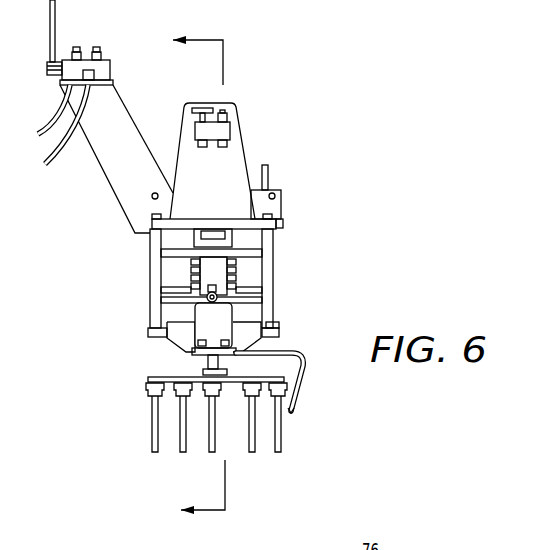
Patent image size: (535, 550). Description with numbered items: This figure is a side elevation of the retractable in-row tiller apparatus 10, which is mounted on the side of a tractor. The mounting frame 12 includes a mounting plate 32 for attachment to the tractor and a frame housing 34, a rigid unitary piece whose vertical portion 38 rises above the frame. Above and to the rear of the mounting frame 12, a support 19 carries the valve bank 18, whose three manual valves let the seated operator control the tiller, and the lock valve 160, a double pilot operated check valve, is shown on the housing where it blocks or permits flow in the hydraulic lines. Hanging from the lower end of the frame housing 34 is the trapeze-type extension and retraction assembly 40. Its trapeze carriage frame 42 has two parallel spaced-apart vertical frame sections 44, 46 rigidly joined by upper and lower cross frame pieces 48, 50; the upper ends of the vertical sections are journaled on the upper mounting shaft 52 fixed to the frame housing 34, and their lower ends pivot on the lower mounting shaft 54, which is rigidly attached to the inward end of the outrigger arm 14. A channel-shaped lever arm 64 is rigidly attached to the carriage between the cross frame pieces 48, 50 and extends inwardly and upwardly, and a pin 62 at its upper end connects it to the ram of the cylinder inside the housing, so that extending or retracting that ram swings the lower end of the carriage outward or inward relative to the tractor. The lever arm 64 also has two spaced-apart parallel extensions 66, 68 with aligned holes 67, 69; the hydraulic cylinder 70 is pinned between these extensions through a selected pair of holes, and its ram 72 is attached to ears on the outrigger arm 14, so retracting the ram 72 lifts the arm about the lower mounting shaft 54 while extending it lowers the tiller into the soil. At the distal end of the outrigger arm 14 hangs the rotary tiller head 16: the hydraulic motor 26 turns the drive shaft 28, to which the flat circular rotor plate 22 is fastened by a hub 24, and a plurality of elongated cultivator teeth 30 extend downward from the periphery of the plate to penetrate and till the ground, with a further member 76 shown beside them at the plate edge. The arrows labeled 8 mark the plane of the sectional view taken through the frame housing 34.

The section line 8- 8 is at (191, 276).
The retractable tiller apparatus 10 is at (221, 144).
The mounting frame 12 is at (284, 189).
The outrigger arm 14 is at (168, 343).
The rotary tiller head 16 is at (147, 376).
The valve bank 18 is at (86, 44).
The support 19 is at (121, 98).
The rotor plate 22 is at (277, 371).
The hub 24 is at (224, 374).
The hydraulic motor 26 is at (222, 335).
The drive shaft 28 is at (208, 363).
The cultivator teeth 30 is at (253, 455).
The mounting plate 32 is at (267, 166).
The frame housing 34 is at (243, 139).
The vertical portion 38 is at (180, 157).
The extension and retraction assembly 40 is at (276, 271).
The trapeze carriage frame 42 is at (148, 279).
The vertical frame section 44 is at (268, 290).
The vertical frame section 46 is at (150, 306).
The upper cross frame piece 48 is at (252, 248).
The lower cross frame piece 50 is at (254, 312).
The upper mounting shaft 52 is at (283, 221).
The lower mounting shaft 54 is at (279, 334).
The pin 62 is at (233, 232).
The lever arm 64 is at (195, 240).
The extension 66 is at (236, 267).
The holes 67 is at (236, 282).
The extension 68 is at (192, 268).
The holes 69 is at (200, 284).
The hydraulic cylinder 70 is at (234, 297).
The ram 72 is at (190, 311).
The bracket tip 76 is at (293, 406).
The lock valve 160 is at (194, 130).